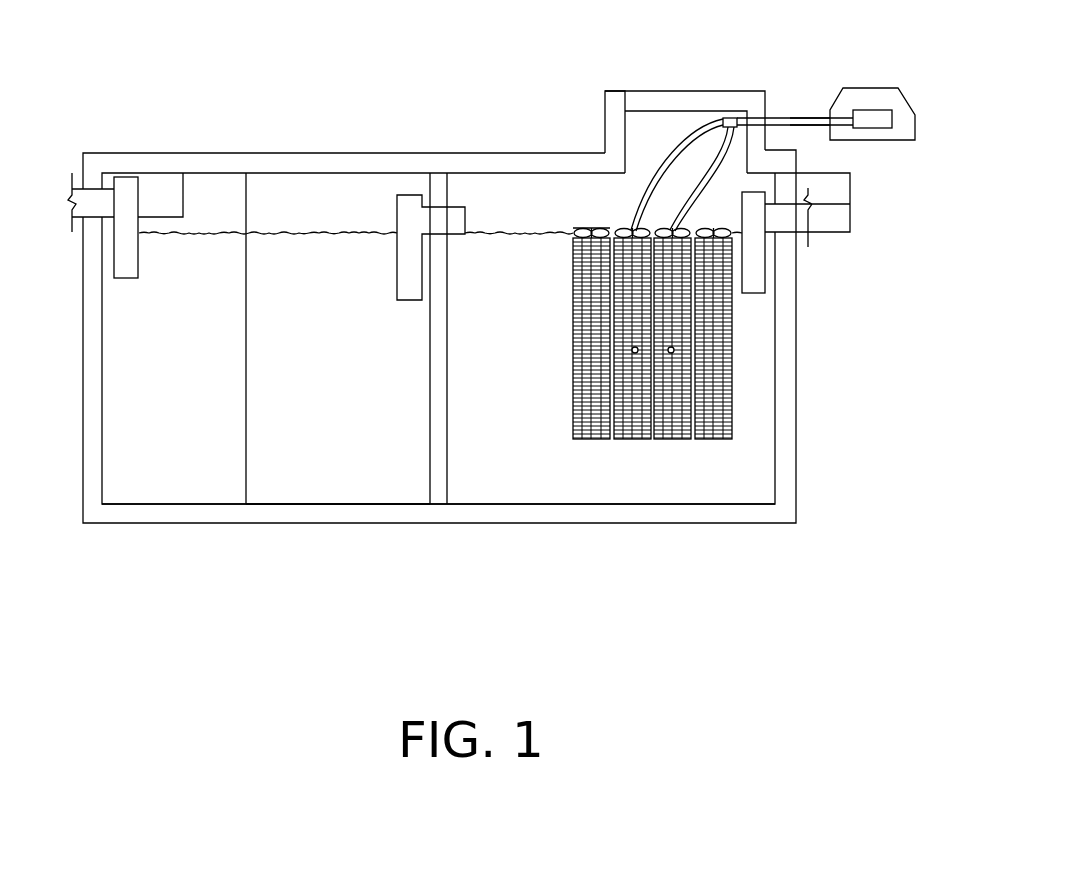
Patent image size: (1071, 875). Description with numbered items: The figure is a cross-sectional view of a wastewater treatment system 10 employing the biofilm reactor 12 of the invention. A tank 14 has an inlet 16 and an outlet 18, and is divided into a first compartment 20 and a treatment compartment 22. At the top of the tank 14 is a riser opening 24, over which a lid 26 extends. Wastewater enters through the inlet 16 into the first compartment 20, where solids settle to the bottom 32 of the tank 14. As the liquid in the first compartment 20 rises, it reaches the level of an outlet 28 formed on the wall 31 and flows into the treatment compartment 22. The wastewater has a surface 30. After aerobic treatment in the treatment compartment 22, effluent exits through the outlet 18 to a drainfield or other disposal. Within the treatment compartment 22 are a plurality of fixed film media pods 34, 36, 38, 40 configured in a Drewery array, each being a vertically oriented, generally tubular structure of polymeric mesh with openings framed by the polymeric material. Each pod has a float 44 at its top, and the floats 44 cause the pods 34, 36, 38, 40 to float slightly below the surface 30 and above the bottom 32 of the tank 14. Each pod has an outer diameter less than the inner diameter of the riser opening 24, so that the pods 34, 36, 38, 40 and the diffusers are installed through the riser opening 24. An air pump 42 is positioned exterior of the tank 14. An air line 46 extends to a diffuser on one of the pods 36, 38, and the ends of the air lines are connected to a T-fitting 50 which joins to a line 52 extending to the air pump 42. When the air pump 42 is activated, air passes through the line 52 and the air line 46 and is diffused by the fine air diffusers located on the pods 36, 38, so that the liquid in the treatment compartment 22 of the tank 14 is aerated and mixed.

The wastewater treatment system 10 is at (508, 92).
The biofilm reactor 12 is at (788, 60).
The tank 14 is at (328, 162).
The inlet 16 is at (94, 209).
The outlet 18 is at (810, 215).
The first compartment 20 is at (112, 416).
The treatment compartment 22 is at (582, 490).
The riser opening 24 is at (612, 137).
The lid 26 is at (697, 103).
The outlet 28 is at (410, 195).
The surface 30 is at (272, 235).
The wall 31 is at (448, 438).
The bottom 32 is at (333, 500).
The fixed film media pod 34 is at (580, 403).
The fixed film media pod 36 is at (626, 439).
The fixed film media pod 38 is at (667, 439).
The fixed film media pod 40 is at (727, 413).
The air pump 42 is at (900, 105).
The float 44 is at (600, 232).
The air line 46 is at (667, 160).
The T-fitting 50 is at (740, 117).
The line 52 is at (810, 117).